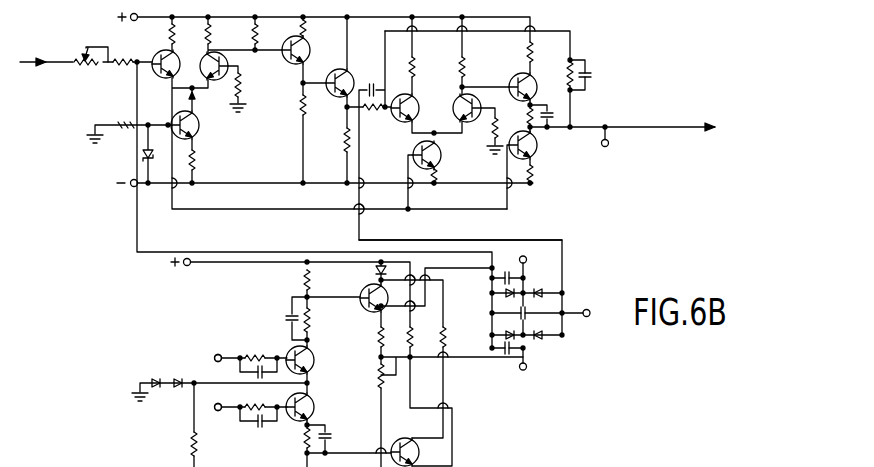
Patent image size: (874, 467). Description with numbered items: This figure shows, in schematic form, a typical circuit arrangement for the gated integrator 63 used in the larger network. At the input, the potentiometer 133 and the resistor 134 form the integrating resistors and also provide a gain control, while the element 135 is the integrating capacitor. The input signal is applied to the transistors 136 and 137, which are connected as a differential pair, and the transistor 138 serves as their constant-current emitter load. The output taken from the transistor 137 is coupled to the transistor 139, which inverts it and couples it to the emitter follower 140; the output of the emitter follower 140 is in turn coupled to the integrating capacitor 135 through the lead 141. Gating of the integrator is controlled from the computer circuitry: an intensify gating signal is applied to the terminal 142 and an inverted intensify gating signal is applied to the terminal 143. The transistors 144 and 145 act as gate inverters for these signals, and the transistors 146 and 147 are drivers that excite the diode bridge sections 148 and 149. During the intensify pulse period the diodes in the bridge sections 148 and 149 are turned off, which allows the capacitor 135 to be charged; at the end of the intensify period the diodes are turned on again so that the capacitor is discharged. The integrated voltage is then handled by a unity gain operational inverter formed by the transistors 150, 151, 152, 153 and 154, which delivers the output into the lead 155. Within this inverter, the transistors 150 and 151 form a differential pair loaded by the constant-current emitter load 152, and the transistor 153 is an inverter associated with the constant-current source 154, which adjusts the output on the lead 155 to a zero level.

The gated integrator 63 is at (668, 98).
The potentiometer 133 is at (86, 67).
The resistor 134 is at (128, 59).
The integrating capacitor 135 is at (545, 318).
The transistor 136 is at (162, 80).
The transistor 137 is at (224, 81).
The transistor 138 is at (201, 129).
The transistor 139 is at (289, 67).
The emitter follower 140 is at (335, 98).
The lead 141 is at (548, 238).
The terminal 142 is at (215, 355).
The terminal 143 is at (219, 411).
The transistor 144 is at (318, 360).
The transistor 145 is at (317, 410).
The transistor 146 is at (361, 311).
The transistor 147 is at (402, 440).
The diode bridge section 148 is at (513, 300).
The diode bridge section 149 is at (548, 346).
The transistor 150 is at (395, 115).
The transistor 151 is at (455, 104).
The constant-current emitter load 152 is at (441, 156).
The transistor 153 is at (512, 79).
The constant-current source 154 is at (537, 155).
The lead 155 is at (652, 130).